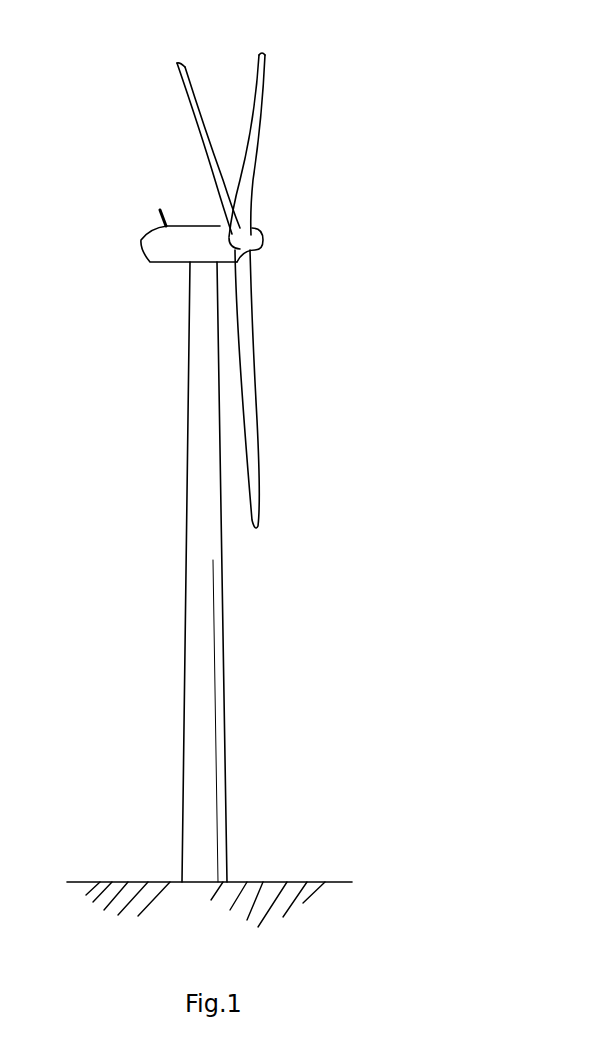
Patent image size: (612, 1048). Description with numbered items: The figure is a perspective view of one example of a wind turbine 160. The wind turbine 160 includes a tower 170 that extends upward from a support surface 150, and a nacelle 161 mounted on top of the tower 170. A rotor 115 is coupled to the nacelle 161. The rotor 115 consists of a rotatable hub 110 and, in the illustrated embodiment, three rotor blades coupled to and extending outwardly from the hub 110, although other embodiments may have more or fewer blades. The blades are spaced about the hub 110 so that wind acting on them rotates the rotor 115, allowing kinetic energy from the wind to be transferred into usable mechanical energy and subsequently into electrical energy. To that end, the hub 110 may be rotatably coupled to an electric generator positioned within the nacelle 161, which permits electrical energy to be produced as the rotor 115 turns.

The wind turbine 160 is at (394, 81).
The tower 170 is at (195, 658).
The support surface 150 is at (131, 882).
The nacelle 161 is at (172, 267).
The hub 110 is at (258, 245).
The rotor 115 is at (265, 225).